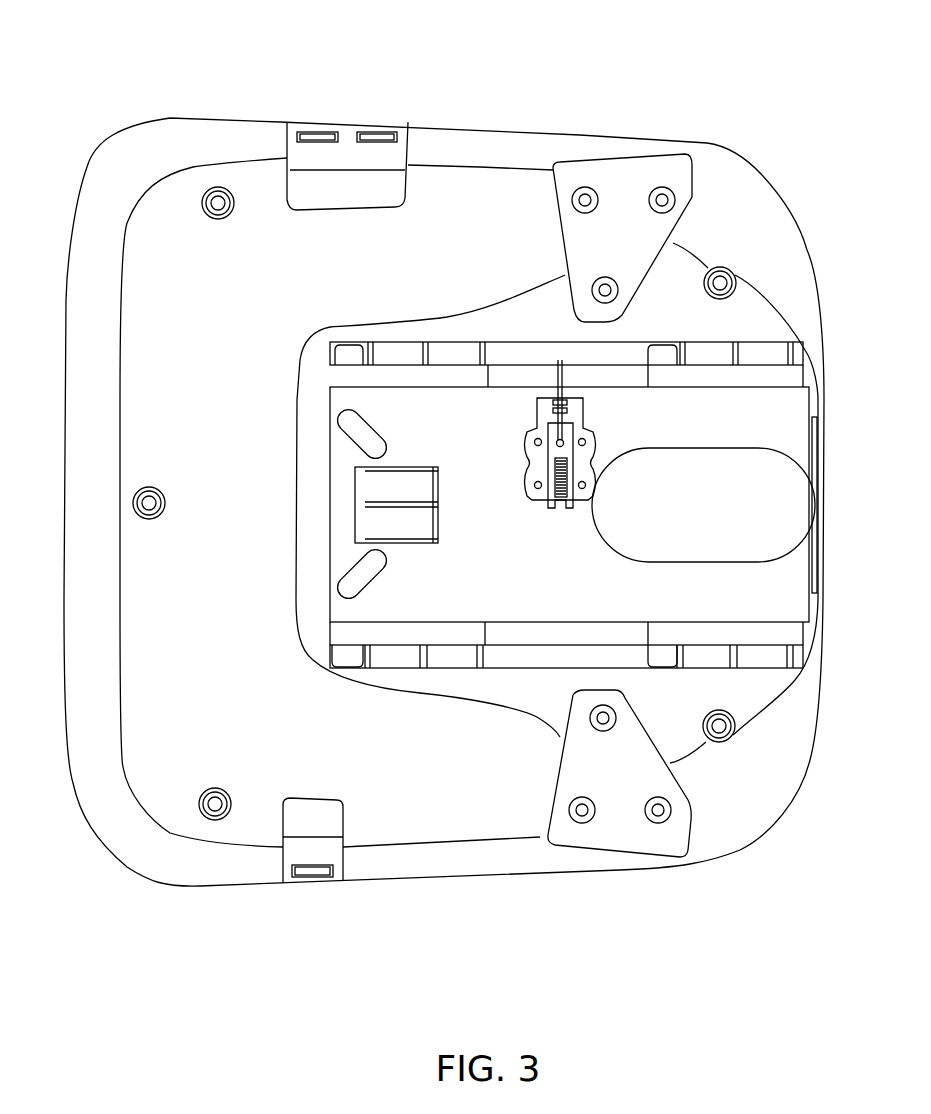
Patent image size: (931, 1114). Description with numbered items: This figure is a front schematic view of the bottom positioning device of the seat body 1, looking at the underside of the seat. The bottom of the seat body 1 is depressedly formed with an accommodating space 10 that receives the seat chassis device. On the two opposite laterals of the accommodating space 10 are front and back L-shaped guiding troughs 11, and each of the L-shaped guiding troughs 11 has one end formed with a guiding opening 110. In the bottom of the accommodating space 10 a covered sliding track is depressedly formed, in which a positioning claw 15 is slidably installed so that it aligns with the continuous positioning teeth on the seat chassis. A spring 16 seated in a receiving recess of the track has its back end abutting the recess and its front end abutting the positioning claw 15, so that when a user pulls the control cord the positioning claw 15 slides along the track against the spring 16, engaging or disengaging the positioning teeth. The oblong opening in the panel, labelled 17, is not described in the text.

The seat body 1 is at (460, 217).
The accommodating space 10 is at (518, 602).
The L-shaped guiding trough 11 is at (397, 367).
The guiding opening 110 is at (352, 357).
The positioning claw 15 is at (550, 508).
The spring 16 is at (550, 470).
The oval opening 17 is at (693, 543).